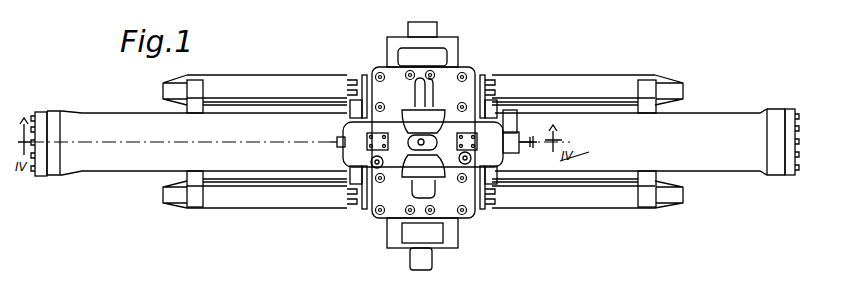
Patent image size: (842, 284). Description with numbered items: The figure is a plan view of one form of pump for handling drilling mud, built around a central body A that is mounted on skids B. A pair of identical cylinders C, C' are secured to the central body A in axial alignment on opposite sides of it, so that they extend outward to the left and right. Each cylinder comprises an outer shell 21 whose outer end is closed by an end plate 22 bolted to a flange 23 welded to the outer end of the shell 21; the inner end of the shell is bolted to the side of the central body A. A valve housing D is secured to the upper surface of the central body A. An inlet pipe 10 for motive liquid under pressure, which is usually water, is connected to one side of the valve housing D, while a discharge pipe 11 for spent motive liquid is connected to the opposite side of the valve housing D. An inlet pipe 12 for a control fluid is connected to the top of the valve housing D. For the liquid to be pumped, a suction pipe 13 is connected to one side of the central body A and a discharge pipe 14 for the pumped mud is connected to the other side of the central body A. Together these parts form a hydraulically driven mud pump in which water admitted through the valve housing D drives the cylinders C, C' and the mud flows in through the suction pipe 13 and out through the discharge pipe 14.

The inlet pipe for motive liquid 10 is at (415, 91).
The discharge pipe for spent motive liquid 11 is at (428, 188).
The inlet pipe for control fluid 12 is at (410, 139).
The suction pipe 13 is at (437, 31).
The discharge pipe for pumped liquid 14 is at (432, 262).
The outer shell 21 is at (138, 167).
The end plate 22 is at (70, 173).
The flange 23 is at (44, 178).
The central body A is at (468, 83).
The skids B is at (297, 83).
The cylinder C is at (125, 111).
The cylinder C' is at (722, 106).
The valve housing D is at (494, 109).